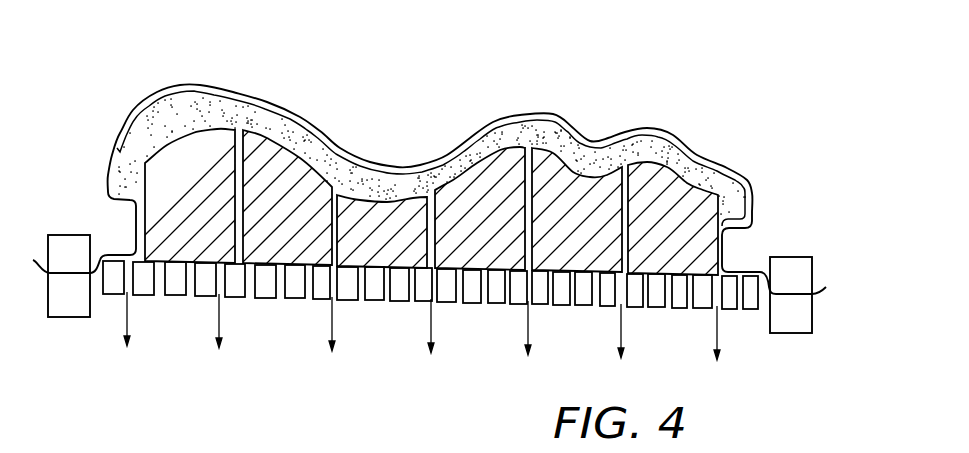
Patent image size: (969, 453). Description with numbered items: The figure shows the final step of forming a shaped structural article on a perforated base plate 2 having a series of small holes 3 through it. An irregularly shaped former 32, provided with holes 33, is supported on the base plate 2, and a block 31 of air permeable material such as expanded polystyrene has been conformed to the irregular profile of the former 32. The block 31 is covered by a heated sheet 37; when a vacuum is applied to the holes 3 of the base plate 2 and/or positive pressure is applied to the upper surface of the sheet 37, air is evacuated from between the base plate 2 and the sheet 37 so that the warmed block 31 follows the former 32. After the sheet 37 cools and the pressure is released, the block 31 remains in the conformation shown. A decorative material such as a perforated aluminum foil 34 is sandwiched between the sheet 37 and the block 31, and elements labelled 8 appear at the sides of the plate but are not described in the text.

The base plate 2 is at (267, 297).
The holes 3 is at (485, 300).
The connector 8 is at (62, 250).
The block 31 is at (525, 133).
The former 32 is at (200, 166).
The holes 33 is at (658, 163).
The perforated aluminum foil 34 is at (318, 113).
The sheet 37 is at (370, 163).